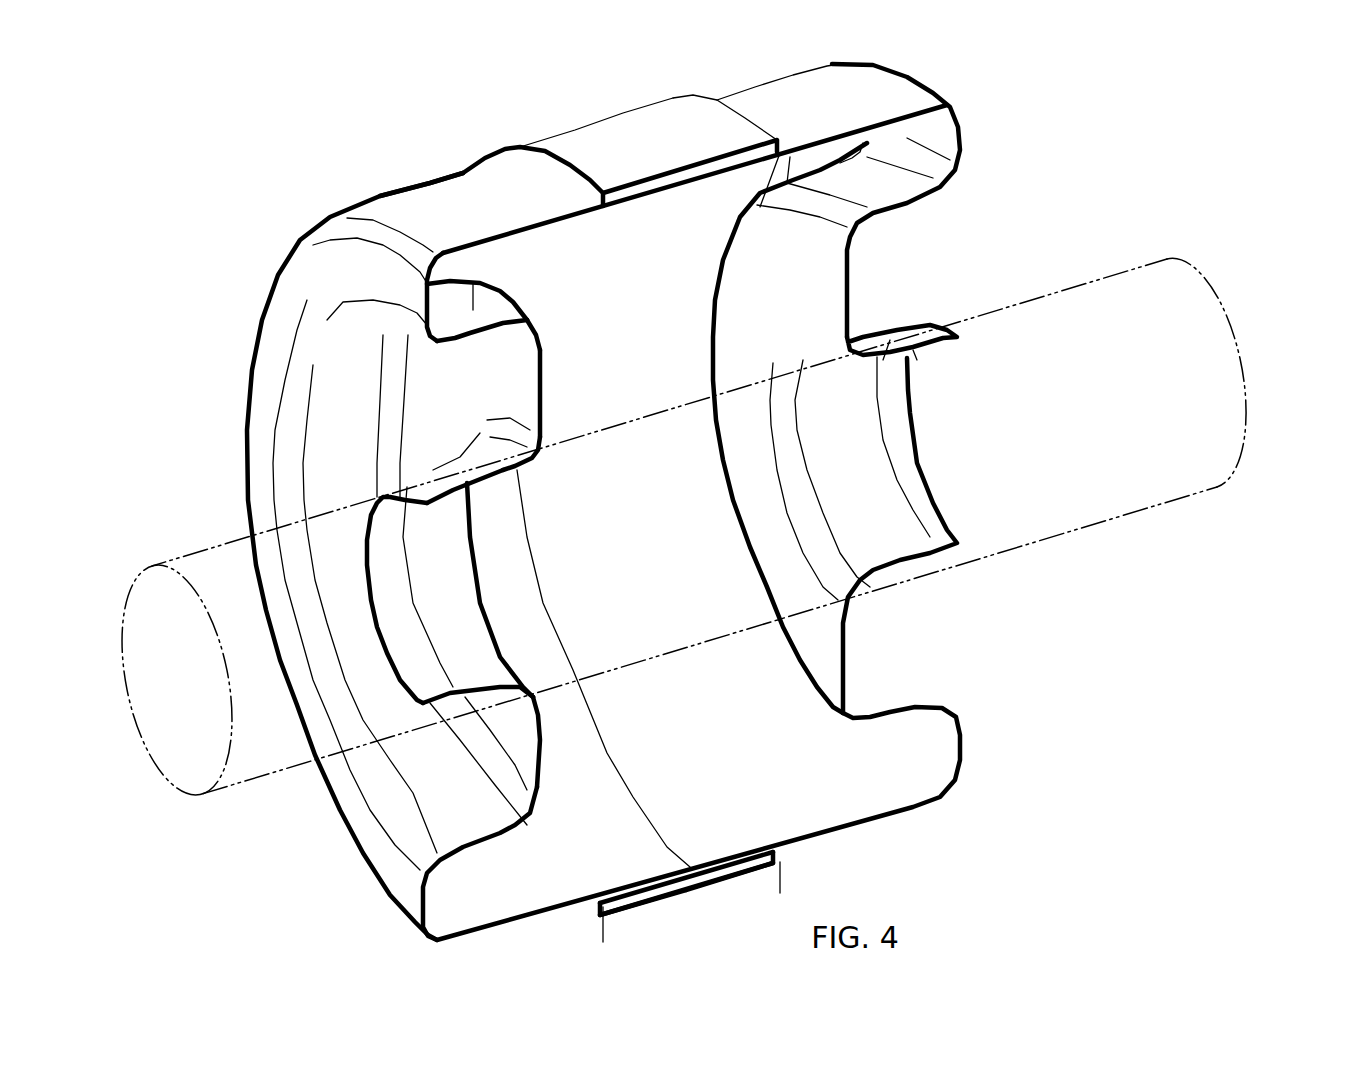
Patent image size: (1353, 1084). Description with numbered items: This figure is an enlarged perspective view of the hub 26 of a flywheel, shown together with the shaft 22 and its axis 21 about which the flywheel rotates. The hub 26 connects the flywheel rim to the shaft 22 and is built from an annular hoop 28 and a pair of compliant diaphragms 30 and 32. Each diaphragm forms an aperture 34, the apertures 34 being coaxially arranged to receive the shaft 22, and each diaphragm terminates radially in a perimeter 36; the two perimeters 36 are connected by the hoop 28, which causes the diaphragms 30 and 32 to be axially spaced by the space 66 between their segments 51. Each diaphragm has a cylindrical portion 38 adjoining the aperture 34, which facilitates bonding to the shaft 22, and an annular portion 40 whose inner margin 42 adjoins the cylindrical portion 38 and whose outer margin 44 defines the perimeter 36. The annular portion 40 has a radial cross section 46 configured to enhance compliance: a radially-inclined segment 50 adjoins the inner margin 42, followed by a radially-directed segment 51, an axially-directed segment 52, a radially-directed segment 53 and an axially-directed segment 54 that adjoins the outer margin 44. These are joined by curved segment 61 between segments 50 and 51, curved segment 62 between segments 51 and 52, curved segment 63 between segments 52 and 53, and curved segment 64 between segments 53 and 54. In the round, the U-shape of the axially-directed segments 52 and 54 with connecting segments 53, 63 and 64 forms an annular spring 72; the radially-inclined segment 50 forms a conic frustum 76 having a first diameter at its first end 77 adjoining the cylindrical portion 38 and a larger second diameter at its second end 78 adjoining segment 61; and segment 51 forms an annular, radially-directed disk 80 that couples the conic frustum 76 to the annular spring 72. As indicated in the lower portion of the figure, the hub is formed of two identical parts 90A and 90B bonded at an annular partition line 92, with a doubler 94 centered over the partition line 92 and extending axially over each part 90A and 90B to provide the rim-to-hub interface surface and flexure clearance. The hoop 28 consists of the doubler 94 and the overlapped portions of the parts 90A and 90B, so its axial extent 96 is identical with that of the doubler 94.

The axis 21 is at (176, 684).
The shaft 22 is at (1220, 463).
The hub 26 is at (283, 250).
The annular hoop 28 is at (517, 145).
The compliant diaphragm 30 is at (269, 371).
The compliant diaphragm 32 is at (854, 235).
The aperture 34 is at (945, 513).
The perimeter 36 is at (583, 192).
The cylindrical portion 38 is at (931, 324).
The annular portion 40 is at (965, 152).
The inner margin 42 is at (903, 340).
The outer margin 44 is at (786, 140).
The radial cross section 46 is at (414, 337).
The radially-inclined segment 50 is at (490, 487).
The radially-directed segment 51 is at (542, 350).
The axially-directed segment 52 is at (473, 312).
The radially-directed segment 53 is at (415, 305).
The axially-directed segment 54 is at (437, 207).
The curved segment 61 is at (542, 460).
The curved segment 62 is at (534, 323).
The curved segment 63 is at (440, 343).
The curved segment 64 is at (418, 274).
The space 66 is at (540, 410).
The annular spring 72 is at (454, 839).
The conic frustum 76 is at (469, 701).
The first end 77 is at (442, 675).
The second end 78 is at (503, 650).
The annular disk 80 is at (533, 752).
The part 90A is at (557, 883).
The part 90B is at (800, 815).
The annular partition line 92 is at (633, 792).
The doubler 94 is at (672, 910).
The axial extent 96 is at (606, 930).